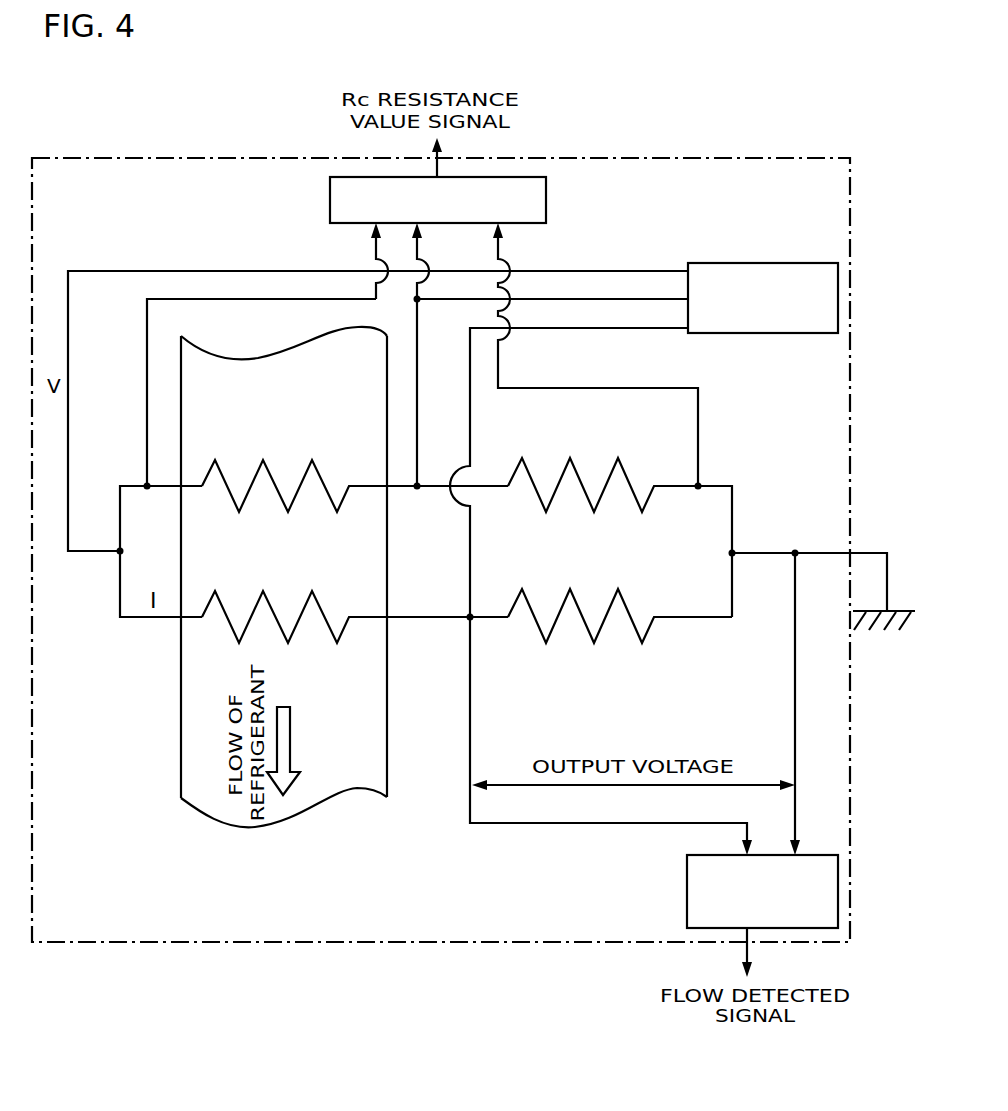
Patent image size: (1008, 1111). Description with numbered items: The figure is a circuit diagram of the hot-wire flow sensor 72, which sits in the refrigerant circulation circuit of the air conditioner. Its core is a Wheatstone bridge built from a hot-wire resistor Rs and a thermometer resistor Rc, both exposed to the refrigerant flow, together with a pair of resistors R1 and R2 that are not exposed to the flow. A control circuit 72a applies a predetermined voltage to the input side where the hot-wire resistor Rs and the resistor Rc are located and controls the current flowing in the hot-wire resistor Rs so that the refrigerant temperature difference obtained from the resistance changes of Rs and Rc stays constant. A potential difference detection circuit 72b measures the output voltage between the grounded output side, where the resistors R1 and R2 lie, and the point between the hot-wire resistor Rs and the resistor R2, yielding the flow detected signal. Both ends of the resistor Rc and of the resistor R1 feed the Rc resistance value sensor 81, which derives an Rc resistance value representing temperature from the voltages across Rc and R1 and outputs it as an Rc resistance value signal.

The hot-wire flow sensor 72 is at (455, 942).
The control circuit 72a is at (755, 333).
The potential difference detection circuit 72b is at (687, 895).
The Rc resistance value sensor 81 is at (546, 196).
The resistor of the thermometer Rc is at (220, 472).
The hot-wire resistor Rs is at (227, 620).
The resistor R1 is at (633, 484).
The resistor R2 is at (633, 615).